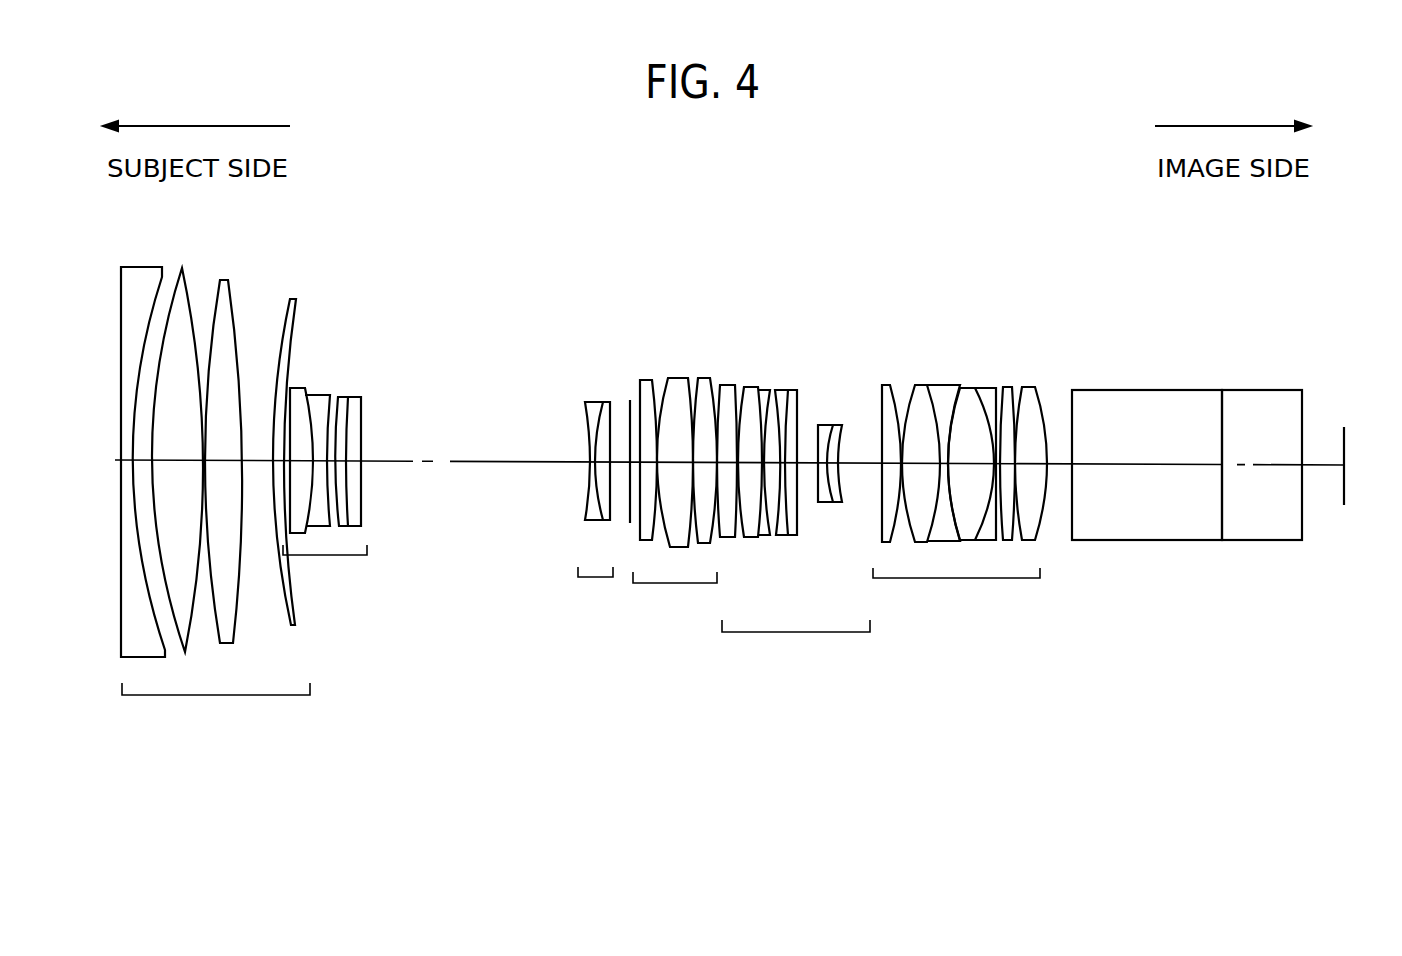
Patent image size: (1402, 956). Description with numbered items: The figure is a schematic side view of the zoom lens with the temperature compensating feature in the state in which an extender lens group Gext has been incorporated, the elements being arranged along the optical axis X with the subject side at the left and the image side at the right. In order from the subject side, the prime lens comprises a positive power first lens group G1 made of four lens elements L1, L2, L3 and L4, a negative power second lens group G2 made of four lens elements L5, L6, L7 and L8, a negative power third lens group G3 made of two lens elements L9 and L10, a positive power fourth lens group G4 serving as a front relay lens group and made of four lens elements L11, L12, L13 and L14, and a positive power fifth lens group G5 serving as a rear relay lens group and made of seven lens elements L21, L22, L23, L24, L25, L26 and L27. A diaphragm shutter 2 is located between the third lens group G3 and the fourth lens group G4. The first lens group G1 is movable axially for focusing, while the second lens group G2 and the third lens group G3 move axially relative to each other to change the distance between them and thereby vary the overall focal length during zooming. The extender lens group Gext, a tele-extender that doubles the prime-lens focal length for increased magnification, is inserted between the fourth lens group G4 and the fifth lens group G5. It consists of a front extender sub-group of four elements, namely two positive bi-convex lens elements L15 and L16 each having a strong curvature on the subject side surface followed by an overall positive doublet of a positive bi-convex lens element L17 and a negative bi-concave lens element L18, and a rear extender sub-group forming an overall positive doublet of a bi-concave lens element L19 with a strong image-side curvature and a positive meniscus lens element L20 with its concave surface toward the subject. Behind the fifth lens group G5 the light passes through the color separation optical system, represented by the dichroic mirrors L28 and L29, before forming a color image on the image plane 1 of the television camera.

The image plane 1 is at (1345, 440).
The diaphragm shutter 2 is at (619, 483).
The optical axis X is at (470, 462).
The first lens group G1 is at (216, 711).
The second lens group G2 is at (325, 574).
The third lens group G3 is at (593, 597).
The fourth lens group G4 is at (675, 600).
The fifth lens group G5 is at (956, 598).
The extender lens group Gext is at (796, 644).
The lens element L1 is at (122, 263).
The lens element L2 is at (182, 268).
The lens element L3 is at (222, 278).
The lens element L4 is at (291, 298).
The lens element L5 is at (297, 388).
The lens element L6 is at (325, 395).
The lens element L7 is at (347, 397).
The lens element L8 is at (357, 396).
The lens element L9 is at (585, 402).
The lens element L10 is at (603, 402).
The lens element L11 is at (643, 380).
The lens element L12 is at (668, 380).
The lens element L13 is at (700, 378).
The lens element L14 is at (711, 378).
The positive bi-convex lens element L15 is at (742, 537).
The positive bi-convex lens element L16 is at (762, 537).
The positive bi-convex lens element L17 is at (776, 537).
The negative bi-concave lens element L18 is at (792, 537).
The bi-concave lens element L19 is at (830, 503).
The positive meniscus lens element L20 is at (843, 428).
The lens element L21 is at (884, 385).
The lens element L22 is at (913, 384).
The lens element L23 is at (937, 383).
The lens element L24 is at (967, 387).
The lens element L25 is at (993, 386).
The lens element L26 is at (1010, 385).
The lens element L27 is at (1037, 388).
The dichroic mirror L28 is at (1173, 390).
The dichroic mirror L29 is at (1265, 390).